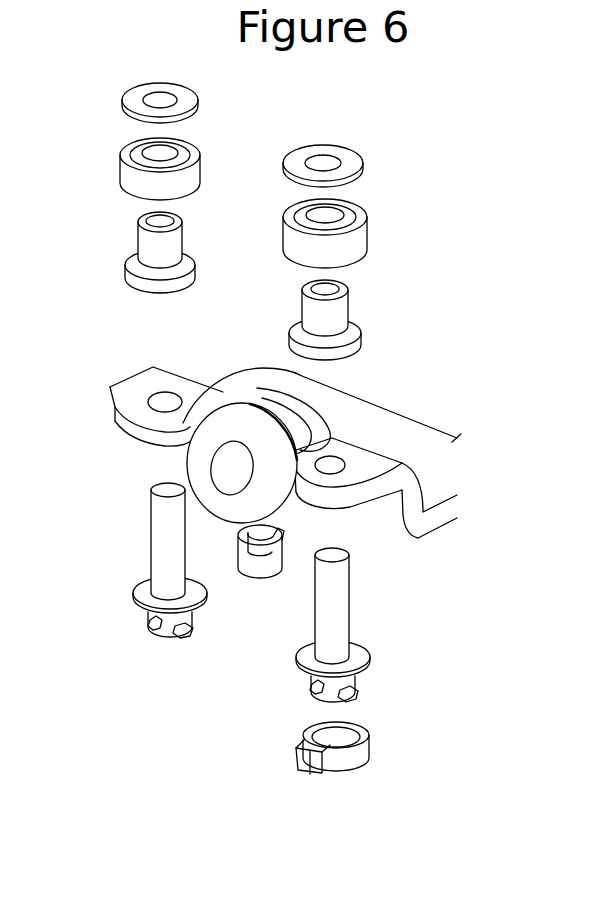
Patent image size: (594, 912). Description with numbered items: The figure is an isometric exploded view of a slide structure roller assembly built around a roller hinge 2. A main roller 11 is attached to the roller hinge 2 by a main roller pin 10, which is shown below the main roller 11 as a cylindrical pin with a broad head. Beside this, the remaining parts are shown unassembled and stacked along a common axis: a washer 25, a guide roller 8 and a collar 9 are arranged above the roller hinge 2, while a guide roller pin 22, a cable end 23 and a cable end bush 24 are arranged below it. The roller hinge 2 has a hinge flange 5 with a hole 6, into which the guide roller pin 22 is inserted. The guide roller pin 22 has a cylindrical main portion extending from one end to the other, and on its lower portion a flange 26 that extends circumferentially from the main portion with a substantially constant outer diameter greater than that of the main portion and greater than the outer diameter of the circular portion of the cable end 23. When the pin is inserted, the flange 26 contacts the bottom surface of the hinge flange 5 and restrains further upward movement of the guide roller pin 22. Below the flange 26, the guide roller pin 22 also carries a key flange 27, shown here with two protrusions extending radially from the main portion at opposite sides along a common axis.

The roller hinge 2 is at (344, 481).
The hinge flange 5 is at (350, 493).
The hole 6 is at (337, 465).
The guide roller 8 is at (370, 232).
The collar 9 is at (350, 320).
The main roller pin 10 is at (233, 478).
The main roller 11 is at (210, 468).
The guide roller pin 22 is at (334, 640).
The cable end 23 is at (347, 770).
The cable end bush 24 is at (240, 580).
The washer 25 is at (350, 148).
The flange 26 is at (312, 655).
The key flange 27 is at (357, 692).